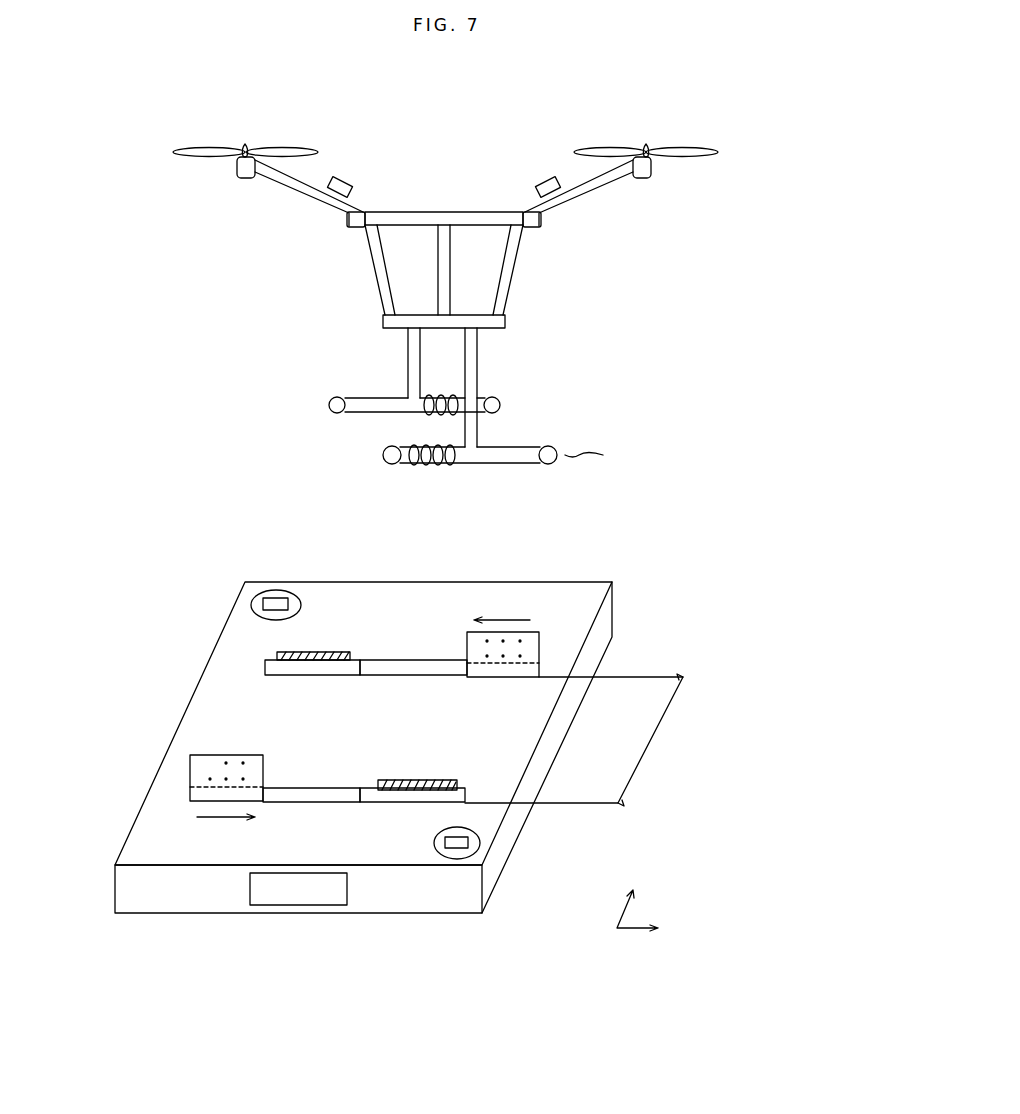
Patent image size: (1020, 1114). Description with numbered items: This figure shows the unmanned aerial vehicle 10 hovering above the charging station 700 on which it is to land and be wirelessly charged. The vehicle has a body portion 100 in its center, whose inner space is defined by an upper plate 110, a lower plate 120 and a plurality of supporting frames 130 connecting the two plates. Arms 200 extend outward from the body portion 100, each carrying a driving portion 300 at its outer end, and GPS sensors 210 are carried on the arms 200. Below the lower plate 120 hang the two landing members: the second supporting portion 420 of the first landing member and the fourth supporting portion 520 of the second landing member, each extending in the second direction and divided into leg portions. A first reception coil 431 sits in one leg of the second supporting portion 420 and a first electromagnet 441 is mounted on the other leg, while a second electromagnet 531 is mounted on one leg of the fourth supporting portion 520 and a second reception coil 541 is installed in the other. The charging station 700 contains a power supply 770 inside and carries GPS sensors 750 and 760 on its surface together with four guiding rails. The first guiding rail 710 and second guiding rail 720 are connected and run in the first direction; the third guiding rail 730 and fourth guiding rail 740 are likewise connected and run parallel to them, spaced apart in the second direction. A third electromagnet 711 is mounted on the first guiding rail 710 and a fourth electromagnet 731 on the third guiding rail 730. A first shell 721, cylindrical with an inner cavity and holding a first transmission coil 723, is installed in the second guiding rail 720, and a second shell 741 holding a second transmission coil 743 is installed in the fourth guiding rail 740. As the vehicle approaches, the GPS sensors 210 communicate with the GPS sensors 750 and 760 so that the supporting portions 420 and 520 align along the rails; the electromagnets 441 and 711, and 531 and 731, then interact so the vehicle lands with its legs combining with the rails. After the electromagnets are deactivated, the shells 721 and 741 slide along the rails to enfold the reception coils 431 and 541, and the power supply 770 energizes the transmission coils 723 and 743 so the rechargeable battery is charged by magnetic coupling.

The unmanned aerial vehicle 10 is at (630, 333).
The body portion 100 is at (533, 272).
The upper plate 110 is at (430, 212).
The lower plate 120 is at (383, 321).
The supporting frames 130 is at (373, 271).
The arms 200 is at (578, 208).
The GPS sensors 210 is at (345, 185).
The driving portions 300 is at (188, 170).
The second supporting portion 420 is at (511, 419).
The first reception coil 431 is at (430, 465).
The first electromagnet 441 is at (520, 465).
The fourth supporting portion 520 is at (513, 405).
The second electromagnet 531 is at (355, 415).
The second reception coil 541 is at (440, 396).
The charging station 700 is at (630, 583).
The first guiding rail 710 is at (398, 804).
The third electromagnet 711 is at (439, 779).
The second guiding rail 720 is at (316, 803).
The first shell 721 is at (190, 772).
The first transmission coil 723 is at (210, 763).
The third guiding rail 730 is at (317, 677).
The fourth electromagnet 731 is at (327, 652).
The fourth guiding rail 740 is at (410, 677).
The second shell 741 is at (540, 650).
The second transmission coil 743 is at (520, 640).
The GPS sensor 750 is at (480, 840).
The GPS sensor 760 is at (276, 598).
The power supply 770 is at (298, 907).